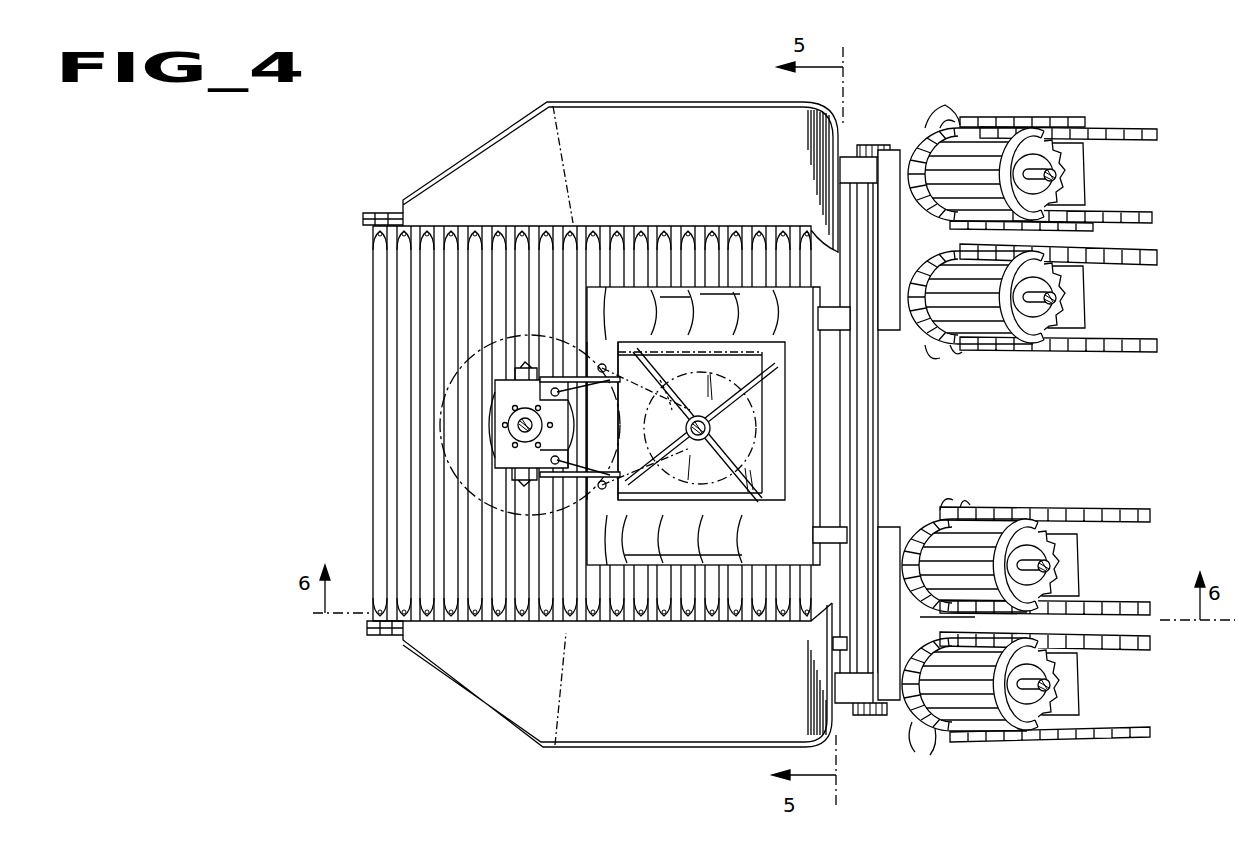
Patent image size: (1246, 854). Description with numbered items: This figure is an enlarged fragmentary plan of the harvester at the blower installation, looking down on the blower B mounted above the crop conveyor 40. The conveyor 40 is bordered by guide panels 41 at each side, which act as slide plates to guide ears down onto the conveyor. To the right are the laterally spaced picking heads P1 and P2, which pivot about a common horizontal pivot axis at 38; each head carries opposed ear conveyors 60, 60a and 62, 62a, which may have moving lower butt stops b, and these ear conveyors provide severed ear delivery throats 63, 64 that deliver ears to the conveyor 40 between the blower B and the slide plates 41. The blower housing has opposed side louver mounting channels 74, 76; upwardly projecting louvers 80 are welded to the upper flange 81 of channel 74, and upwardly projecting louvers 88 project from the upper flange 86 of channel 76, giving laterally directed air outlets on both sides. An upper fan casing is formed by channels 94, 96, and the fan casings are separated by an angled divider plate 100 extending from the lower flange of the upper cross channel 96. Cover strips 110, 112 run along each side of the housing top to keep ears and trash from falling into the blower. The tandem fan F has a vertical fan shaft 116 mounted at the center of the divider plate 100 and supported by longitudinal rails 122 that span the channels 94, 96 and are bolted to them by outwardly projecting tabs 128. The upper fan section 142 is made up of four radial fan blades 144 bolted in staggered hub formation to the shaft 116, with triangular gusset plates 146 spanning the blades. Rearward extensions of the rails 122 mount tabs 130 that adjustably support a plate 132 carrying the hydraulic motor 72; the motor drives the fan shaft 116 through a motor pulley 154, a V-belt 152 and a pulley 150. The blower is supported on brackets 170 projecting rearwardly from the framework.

The pivot axis 38 is at (878, 488).
The crop conveyor 40 is at (373, 331).
The guide panels 41 is at (680, 131).
The ear conveyor 60 is at (1118, 738).
The ear conveyor 60a is at (1108, 512).
The ear conveyor 62 is at (1105, 345).
The ear conveyor 62a is at (1128, 128).
The severed ear delivery throat 63 is at (920, 617).
The severed ear delivery throat 64 is at (975, 236).
The hydraulic motor 72 is at (494, 421).
The side louver mounting channel 74 is at (660, 556).
The side louver mounting channel 76 is at (773, 290).
The upwardly projecting louvers 80 is at (683, 555).
The upper flange 81 is at (742, 530).
The upper flange 86 is at (644, 310).
The upwardly projecting louvers 88 is at (720, 311).
The upper fan casing channel 94 is at (802, 470).
The upper cross channel 96 is at (612, 435).
The divider plate 100 is at (780, 408).
The cover strip 110 is at (598, 565).
The cover strip 112 is at (598, 290).
The fan shaft 116 is at (708, 432).
The longitudinal rails 122 is at (690, 445).
The outwardly projecting tabs 128 is at (640, 375).
The tabs 130 is at (602, 366).
The plate 132 is at (530, 402).
The upper fan section 142 is at (762, 440).
The radial fan blades 144 is at (711, 432).
The triangular gusset plates 146 is at (736, 373).
The pulley 150 is at (676, 312).
The V-belt 152 is at (663, 537).
The motor pulley 154 is at (452, 376).
The brackets 170 is at (832, 307).
The moving lower butt stops b is at (946, 434).
The blower B is at (835, 452).
The tandem fan F is at (778, 385).
The picking head P1 is at (1084, 742).
The picking head P2 is at (1110, 122).